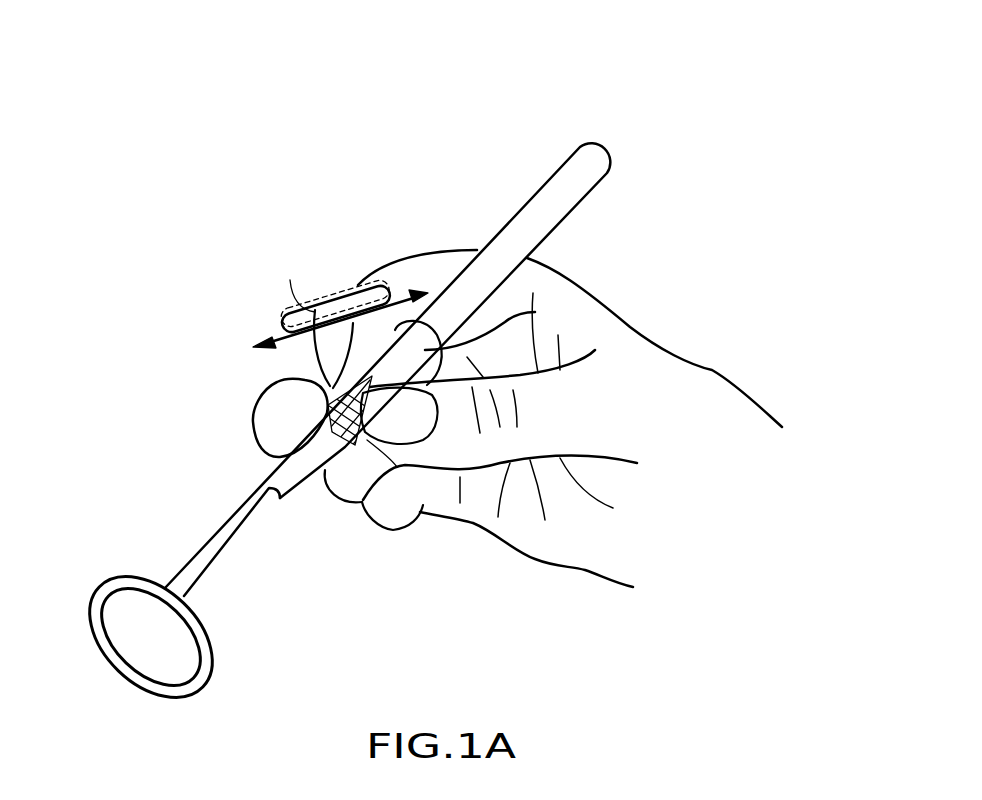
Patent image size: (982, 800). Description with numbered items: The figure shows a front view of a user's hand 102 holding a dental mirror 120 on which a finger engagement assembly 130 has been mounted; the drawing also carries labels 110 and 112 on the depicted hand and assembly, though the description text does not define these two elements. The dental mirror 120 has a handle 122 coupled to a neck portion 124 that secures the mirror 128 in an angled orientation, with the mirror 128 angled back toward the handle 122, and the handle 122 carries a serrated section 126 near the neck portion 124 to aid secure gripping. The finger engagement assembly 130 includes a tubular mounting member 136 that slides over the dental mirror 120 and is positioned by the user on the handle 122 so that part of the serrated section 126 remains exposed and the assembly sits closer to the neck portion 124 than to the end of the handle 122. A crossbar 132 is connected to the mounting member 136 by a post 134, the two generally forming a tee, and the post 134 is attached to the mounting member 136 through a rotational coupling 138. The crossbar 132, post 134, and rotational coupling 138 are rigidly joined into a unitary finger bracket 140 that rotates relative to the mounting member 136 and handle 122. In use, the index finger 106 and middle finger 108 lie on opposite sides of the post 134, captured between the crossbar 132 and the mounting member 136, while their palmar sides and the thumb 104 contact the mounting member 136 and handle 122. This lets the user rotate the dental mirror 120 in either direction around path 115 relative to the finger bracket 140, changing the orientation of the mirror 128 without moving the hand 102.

The hand 102 is at (548, 598).
The thumb 104 is at (574, 418).
The index finger 106 is at (443, 263).
The middle finger 108 is at (264, 438).
The back of hand 110 is at (560, 288).
The finger 112 is at (371, 285).
The path 115 is at (401, 292).
The dental mirror 120 is at (537, 118).
The handle 122 is at (590, 177).
The neck portion 124 is at (203, 561).
The serrated section 126 is at (346, 445).
The mirror 128 is at (143, 650).
The finger engagement assembly 130 is at (312, 266).
The crossbar 132 is at (314, 309).
The post 134 is at (322, 358).
The mounting member 136 is at (535, 312).
The rotational coupling 138 is at (430, 406).
The finger bracket 140 is at (283, 348).